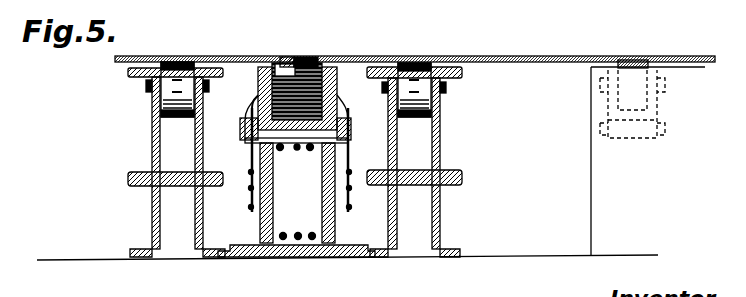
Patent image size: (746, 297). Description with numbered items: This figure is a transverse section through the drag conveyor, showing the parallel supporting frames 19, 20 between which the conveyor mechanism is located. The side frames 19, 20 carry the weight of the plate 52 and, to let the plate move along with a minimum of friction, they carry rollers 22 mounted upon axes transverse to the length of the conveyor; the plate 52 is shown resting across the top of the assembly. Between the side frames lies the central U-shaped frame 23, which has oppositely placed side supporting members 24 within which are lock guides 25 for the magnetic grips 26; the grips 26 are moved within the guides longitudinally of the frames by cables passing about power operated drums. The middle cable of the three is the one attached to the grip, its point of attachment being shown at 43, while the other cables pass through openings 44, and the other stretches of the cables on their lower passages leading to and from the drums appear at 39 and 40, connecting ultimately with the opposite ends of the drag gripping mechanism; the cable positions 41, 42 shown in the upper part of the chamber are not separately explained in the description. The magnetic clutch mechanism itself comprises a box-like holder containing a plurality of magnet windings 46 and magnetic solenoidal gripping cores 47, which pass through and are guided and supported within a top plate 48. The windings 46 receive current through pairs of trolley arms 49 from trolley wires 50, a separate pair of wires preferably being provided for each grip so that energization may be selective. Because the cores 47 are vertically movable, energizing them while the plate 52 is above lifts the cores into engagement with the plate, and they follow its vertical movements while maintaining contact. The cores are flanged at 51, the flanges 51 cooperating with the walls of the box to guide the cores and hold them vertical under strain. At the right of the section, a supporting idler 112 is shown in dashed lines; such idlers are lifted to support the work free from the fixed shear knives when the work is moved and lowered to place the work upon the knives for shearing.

The supporting frame 19 is at (152, 126).
The supporting frame 20 is at (455, 131).
The roller 22 is at (183, 62).
The central U-shaped frame 23 is at (337, 240).
The side supporting member 24 is at (262, 224).
The lock guide 25 is at (348, 133).
The magnetic grip 26 is at (262, 91).
The cable stretch 39 is at (312, 240).
The cable stretch 40 is at (297, 240).
The contact 41 is at (280, 151).
The contact 42 is at (309, 151).
The point of attachment 43 is at (297, 151).
The opening 44 is at (252, 124).
The magnet winding 46 is at (336, 94).
The magnetic solenoidal gripping core 47 is at (300, 62).
The top plate 48 is at (314, 60).
The trolley arm 49 is at (251, 162).
The trolley wire 50 is at (250, 195).
The flange 51 is at (283, 60).
The plate 52 is at (515, 56).
The supporting idler 112 is at (665, 39).